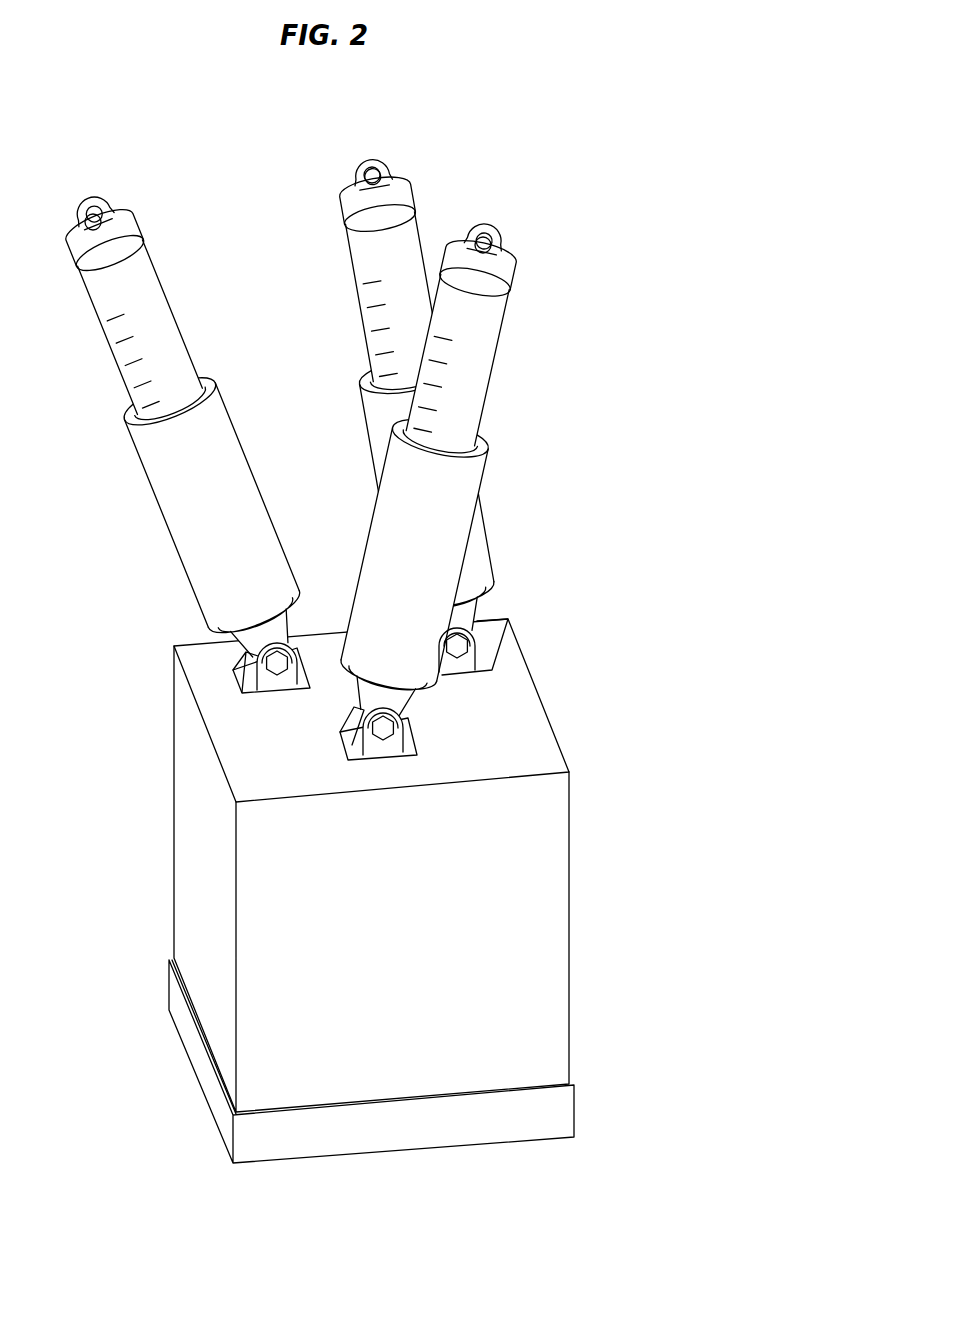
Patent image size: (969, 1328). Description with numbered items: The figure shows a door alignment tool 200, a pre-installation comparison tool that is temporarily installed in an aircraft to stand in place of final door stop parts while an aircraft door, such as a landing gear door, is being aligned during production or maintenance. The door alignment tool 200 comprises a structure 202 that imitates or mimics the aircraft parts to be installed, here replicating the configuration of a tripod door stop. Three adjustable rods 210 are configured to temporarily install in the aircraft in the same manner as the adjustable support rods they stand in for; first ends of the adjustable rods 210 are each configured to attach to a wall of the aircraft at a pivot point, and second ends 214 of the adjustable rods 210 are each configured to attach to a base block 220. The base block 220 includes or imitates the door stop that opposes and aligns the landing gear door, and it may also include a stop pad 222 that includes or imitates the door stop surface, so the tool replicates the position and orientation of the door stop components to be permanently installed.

The door alignment tool 200 is at (413, 650).
The structure 202 is at (334, 891).
The adjustable rods 210 is at (294, 437).
The second ends 214 is at (252, 680).
The base block 220 is at (536, 908).
The stop pad 222 is at (193, 1042).